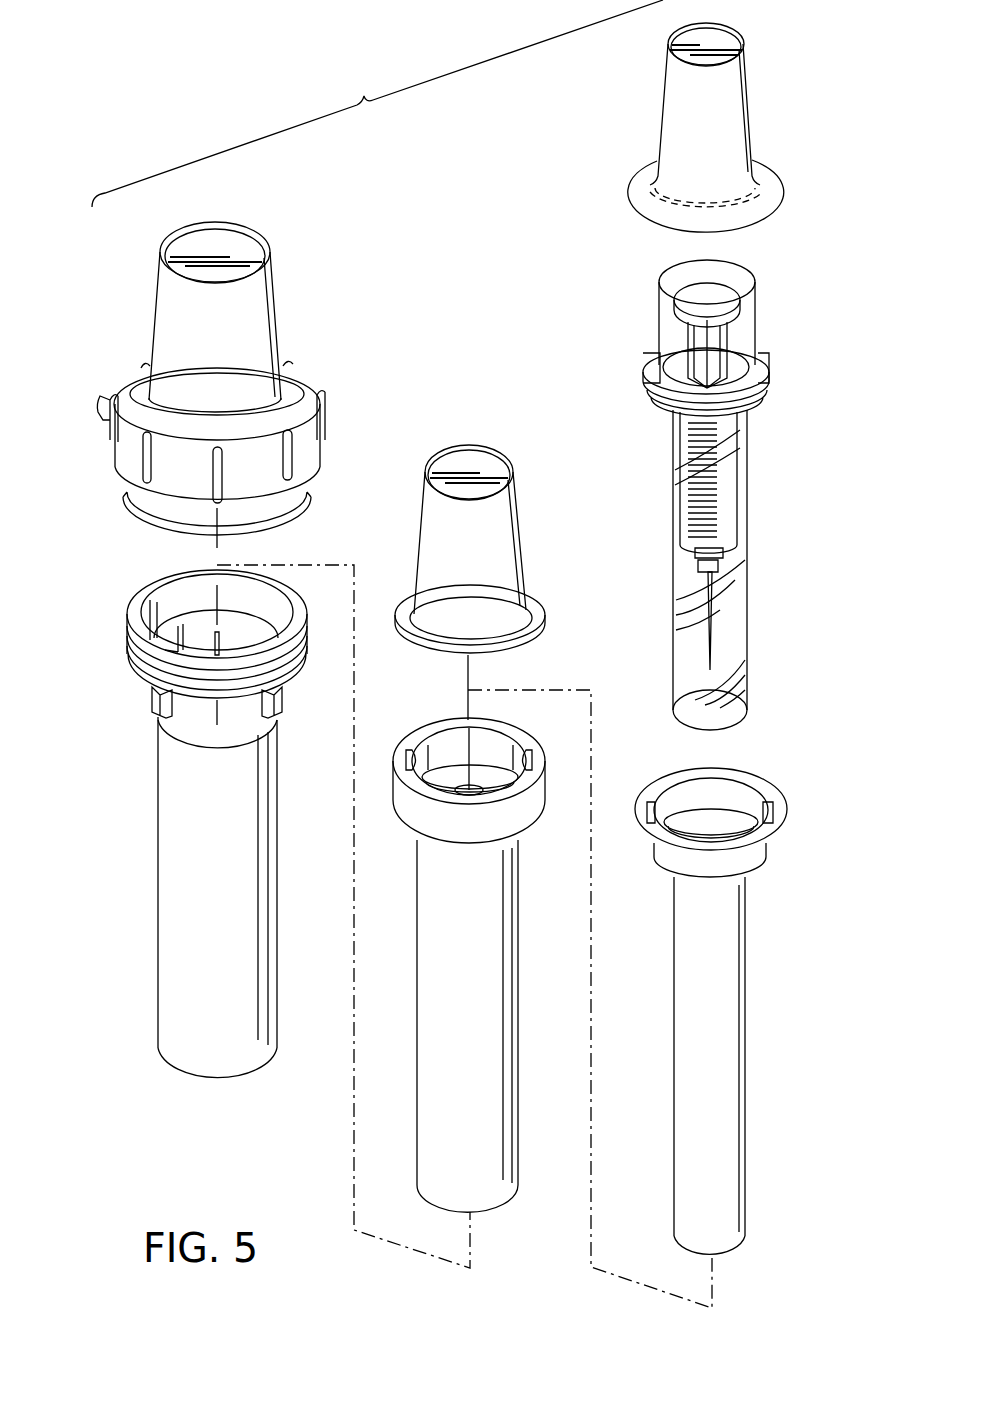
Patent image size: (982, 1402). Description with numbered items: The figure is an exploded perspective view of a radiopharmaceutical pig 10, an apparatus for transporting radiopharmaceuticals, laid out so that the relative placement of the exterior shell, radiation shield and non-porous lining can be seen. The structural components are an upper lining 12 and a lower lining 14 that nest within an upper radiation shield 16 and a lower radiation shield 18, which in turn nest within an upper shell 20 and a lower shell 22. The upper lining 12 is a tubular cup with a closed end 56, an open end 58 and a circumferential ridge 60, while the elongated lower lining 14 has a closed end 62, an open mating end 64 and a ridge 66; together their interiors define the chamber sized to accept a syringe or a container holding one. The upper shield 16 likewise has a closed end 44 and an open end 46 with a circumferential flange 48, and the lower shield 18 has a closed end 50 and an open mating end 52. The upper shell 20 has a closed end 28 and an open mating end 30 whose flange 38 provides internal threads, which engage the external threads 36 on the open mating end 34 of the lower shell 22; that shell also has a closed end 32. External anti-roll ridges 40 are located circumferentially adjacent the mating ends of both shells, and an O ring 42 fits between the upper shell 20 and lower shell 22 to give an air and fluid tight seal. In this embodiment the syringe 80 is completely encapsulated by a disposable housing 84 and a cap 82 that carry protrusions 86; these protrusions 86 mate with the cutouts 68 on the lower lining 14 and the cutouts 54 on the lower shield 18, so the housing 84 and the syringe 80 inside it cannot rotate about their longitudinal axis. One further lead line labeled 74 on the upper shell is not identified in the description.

The radiopharmaceutical pig 10 is at (377, 103).
The upper lining 12 is at (734, 116).
The lower lining 14 is at (702, 772).
The upper radiation shield 16 is at (504, 552).
The lower radiation shield 18 is at (470, 964).
The upper exterior shell 20 is at (196, 310).
The lower exterior shell 22 is at (179, 846).
The closed end 28 is at (240, 250).
The open mating end 30 is at (248, 439).
The closed end 32 is at (178, 1075).
The open mating end 34 is at (152, 585).
The external threads 36 is at (127, 642).
The flange 38 is at (300, 380).
The anti-roll ridges 40 is at (100, 404).
The O ring 42 is at (303, 508).
The closed end 44 is at (482, 462).
The open end 46 is at (530, 650).
The circumferential flange 48 is at (537, 610).
The closed end 50 is at (510, 1200).
The open mating end 52 is at (425, 725).
The cutouts 54 is at (535, 760).
The closed end 56 is at (712, 33).
The open end 58 is at (766, 233).
The circumferential ridge 60 is at (770, 180).
The closed end 62 is at (740, 1250).
The open mating end 64 is at (690, 830).
The ridge 66 is at (755, 786).
The cutouts 68 is at (650, 815).
The cap body 74 is at (150, 330).
The syringe 80 is at (712, 628).
The cap 82 is at (740, 268).
The housing 84 is at (673, 562).
The protrusions 86 is at (648, 365).